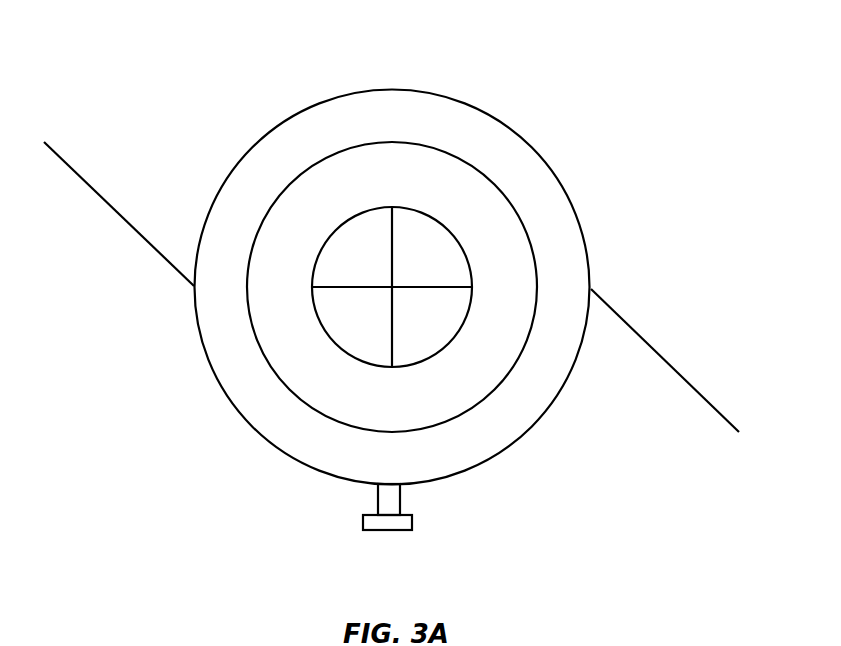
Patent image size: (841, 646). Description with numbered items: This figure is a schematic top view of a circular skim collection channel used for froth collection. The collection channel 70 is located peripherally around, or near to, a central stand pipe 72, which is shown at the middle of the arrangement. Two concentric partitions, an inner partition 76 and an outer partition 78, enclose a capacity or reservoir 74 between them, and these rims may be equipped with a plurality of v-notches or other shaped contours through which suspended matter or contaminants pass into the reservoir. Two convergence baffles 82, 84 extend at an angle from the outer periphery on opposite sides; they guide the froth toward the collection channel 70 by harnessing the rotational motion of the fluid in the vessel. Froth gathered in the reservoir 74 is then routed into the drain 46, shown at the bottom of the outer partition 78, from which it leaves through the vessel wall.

The collection channel 70 is at (137, 54).
The stand pipe 72 is at (410, 367).
The reservoir 74 is at (406, 127).
The inner partition 76 is at (480, 170).
The outer partition 78 is at (455, 100).
The convergence baffle 82 is at (128, 224).
The convergence baffle 84 is at (646, 342).
The drain 46 is at (376, 494).